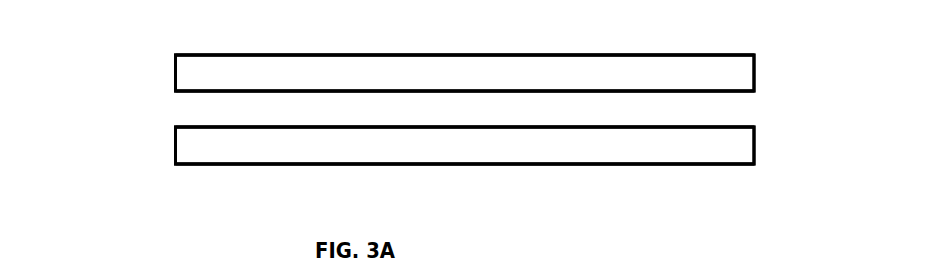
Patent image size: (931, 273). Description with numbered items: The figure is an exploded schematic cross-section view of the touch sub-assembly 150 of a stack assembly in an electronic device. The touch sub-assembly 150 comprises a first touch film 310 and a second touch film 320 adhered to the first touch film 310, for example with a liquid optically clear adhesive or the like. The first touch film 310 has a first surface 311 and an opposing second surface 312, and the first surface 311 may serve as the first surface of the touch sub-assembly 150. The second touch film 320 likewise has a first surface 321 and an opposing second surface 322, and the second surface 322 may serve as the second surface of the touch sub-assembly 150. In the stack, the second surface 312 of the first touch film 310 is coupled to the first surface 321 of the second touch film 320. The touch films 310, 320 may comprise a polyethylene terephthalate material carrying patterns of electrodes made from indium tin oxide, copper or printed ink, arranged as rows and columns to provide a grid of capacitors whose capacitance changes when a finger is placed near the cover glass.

The touch sub-assembly 150 is at (85, 53).
The first touch film 310 is at (754, 75).
The first surface of the first touch film 311 is at (248, 55).
The second surface of the first touch film 312 is at (248, 91).
The second touch film 320 is at (754, 145).
The first surface of the second touch film 321 is at (532, 127).
The second surface of the second touch film 322 is at (532, 164).